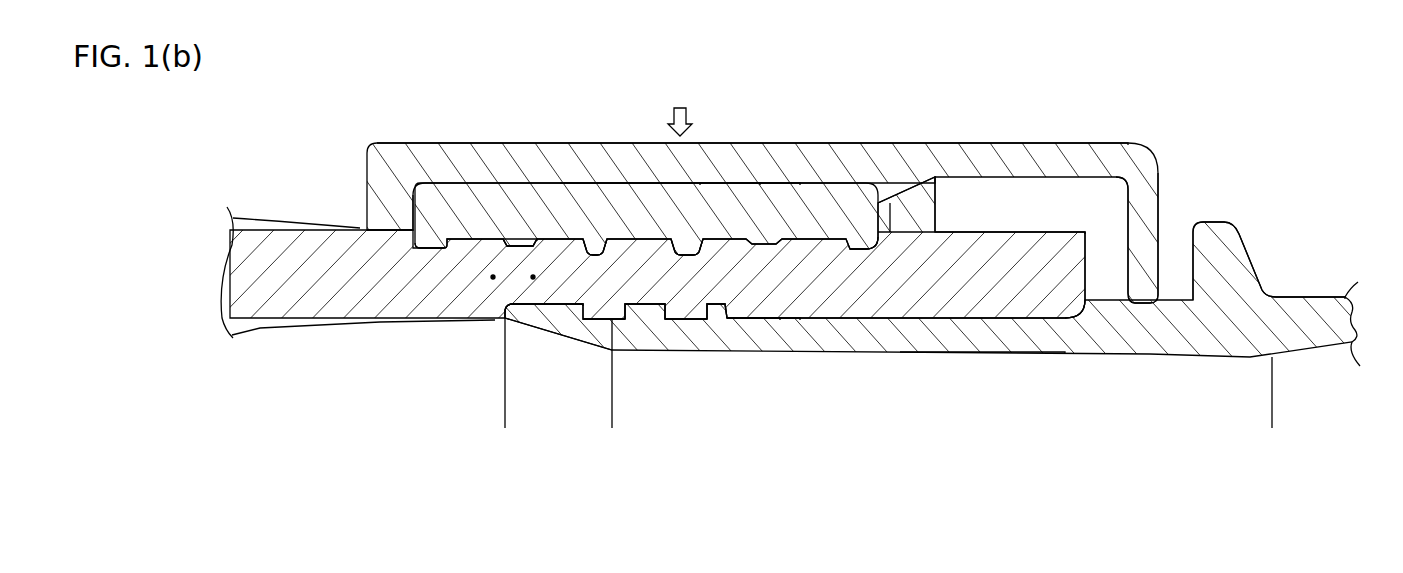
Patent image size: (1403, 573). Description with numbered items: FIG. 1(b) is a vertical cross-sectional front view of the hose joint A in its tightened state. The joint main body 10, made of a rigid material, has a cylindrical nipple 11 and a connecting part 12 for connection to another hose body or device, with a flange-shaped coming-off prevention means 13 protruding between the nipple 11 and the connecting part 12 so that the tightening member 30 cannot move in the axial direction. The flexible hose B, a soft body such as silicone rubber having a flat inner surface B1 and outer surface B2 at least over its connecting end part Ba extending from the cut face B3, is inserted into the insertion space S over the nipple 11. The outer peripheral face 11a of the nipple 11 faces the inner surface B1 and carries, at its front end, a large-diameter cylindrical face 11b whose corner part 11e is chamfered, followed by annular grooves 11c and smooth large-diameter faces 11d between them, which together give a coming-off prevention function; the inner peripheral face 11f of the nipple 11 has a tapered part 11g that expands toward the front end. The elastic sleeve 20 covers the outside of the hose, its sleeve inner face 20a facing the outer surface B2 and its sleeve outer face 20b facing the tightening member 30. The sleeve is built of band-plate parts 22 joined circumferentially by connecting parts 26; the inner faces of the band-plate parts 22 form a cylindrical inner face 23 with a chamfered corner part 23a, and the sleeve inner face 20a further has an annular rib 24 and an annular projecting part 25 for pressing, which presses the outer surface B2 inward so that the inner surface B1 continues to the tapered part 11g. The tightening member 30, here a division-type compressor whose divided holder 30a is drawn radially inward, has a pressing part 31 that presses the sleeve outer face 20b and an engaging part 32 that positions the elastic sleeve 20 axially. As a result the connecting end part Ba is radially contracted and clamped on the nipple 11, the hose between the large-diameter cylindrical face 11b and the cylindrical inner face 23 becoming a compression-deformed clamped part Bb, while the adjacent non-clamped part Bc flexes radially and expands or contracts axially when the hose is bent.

The joint main body 10 is at (1209, 219).
The nipple 11 is at (935, 356).
The outer peripheral face 11a is at (555, 332).
The large-diameter cylindrical face 11b is at (547, 306).
The annular groove 11c is at (600, 320).
The large-diameter face 11d is at (647, 306).
The corner part 11e is at (506, 322).
The inner peripheral face 11f is at (987, 353).
The tapered part 11g is at (517, 312).
The connecting part 12 is at (1306, 297).
The coming-off prevention means 13 is at (1124, 204).
The elastic sleeve 20 is at (437, 182).
The sleeve inner face 20a is at (595, 252).
The sleeve outer face 20b is at (727, 186).
The band-plate part 22 is at (772, 185).
The cylindrical inner face 23 is at (531, 245).
The corner part 23a is at (516, 244).
The annular rib 24 is at (680, 253).
The projecting part for pressing 25 is at (373, 224).
The connecting part 26 is at (420, 240).
The tightening member 30 is at (917, 133).
The divided holder 30a is at (752, 144).
The pressing part 31 is at (624, 186).
The engaging part 32 is at (871, 188).
The hose joint A is at (563, 123).
The insertion space S is at (726, 300).
The flexible hose B is at (958, 222).
The connecting end part Ba is at (981, 233).
The inner surface B1 is at (295, 327).
The outer surface B2 is at (318, 226).
The cut face B3 is at (1090, 268).
The clamped part Bb is at (533, 277).
The non-clamped part Bc is at (493, 277).